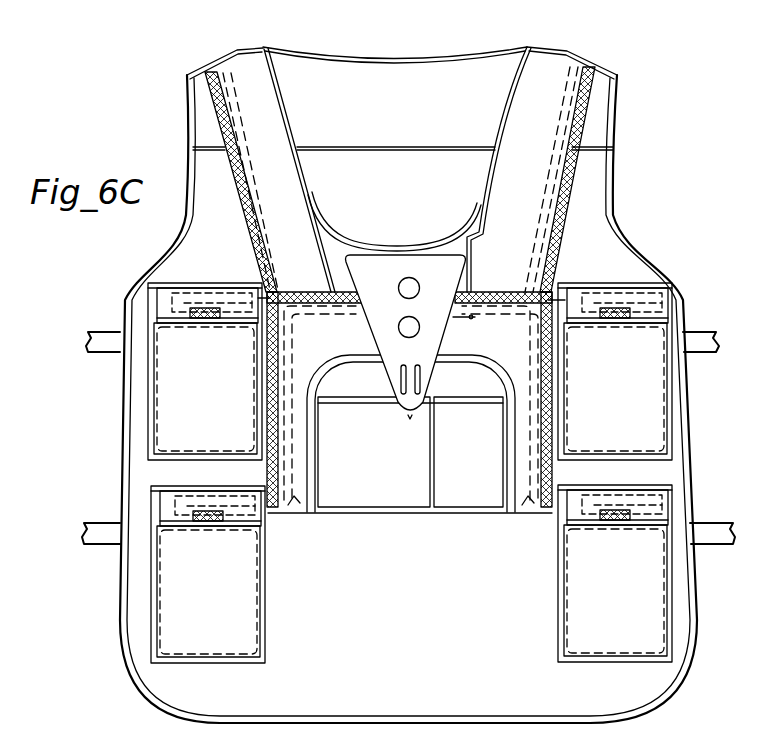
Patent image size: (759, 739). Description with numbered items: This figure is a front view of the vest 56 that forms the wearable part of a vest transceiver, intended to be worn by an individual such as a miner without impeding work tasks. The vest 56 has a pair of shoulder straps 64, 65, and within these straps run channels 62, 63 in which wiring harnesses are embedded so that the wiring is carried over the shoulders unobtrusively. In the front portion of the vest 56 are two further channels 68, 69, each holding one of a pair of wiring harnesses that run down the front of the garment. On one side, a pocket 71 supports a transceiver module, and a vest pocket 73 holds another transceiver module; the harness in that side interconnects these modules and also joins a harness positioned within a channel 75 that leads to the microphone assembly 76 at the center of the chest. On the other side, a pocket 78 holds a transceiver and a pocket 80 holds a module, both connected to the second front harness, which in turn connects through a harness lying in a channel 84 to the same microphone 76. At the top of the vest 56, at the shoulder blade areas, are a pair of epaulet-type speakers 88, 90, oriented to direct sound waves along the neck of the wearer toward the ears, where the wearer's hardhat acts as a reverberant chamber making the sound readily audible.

The vest 56 is at (416, 722).
The channel 62 is at (280, 266).
The channel 63 is at (532, 235).
The shoulder strap 64 is at (206, 127).
The shoulder strap 65 is at (600, 128).
The channel 68 is at (299, 513).
The channel 69 is at (523, 513).
The pocket 71 is at (234, 662).
The vest pocket 73 is at (217, 457).
The channel 75 is at (313, 311).
The microphone assembly 76 is at (390, 291).
The pocket 78 is at (619, 662).
The pocket 80 is at (626, 457).
The channel 84 is at (506, 311).
The speaker 88 is at (226, 57).
The speaker 90 is at (580, 54).